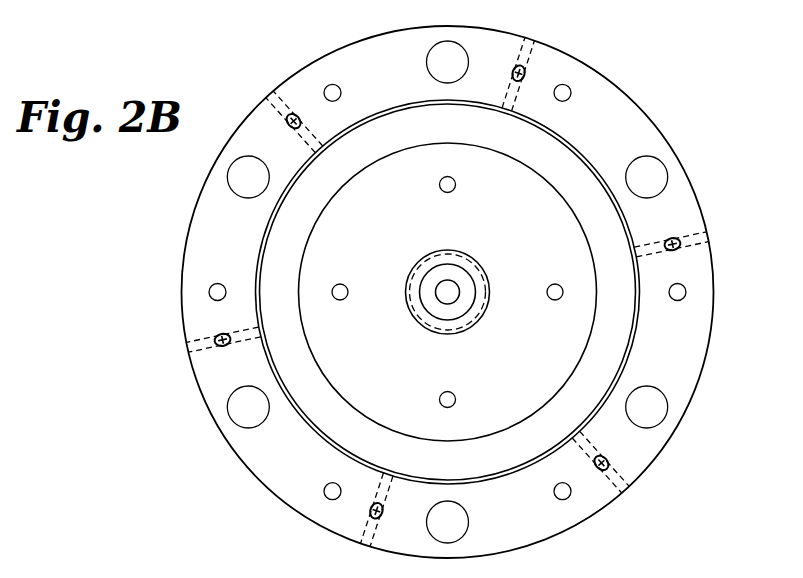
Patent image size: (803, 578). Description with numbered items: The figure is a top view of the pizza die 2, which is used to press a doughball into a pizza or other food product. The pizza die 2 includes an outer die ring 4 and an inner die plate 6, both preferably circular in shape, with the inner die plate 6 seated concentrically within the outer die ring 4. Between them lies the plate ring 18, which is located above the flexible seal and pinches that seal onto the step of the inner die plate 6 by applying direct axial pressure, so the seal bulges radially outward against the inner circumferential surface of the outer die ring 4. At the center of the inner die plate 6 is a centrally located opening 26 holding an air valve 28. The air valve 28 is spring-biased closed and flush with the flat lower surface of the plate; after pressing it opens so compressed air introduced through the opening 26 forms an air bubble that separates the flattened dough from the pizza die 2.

The pizza die 2 is at (637, 84).
The outer die ring 4 is at (633, 128).
The inner die plate 6 is at (529, 217).
The plate ring 18 is at (274, 270).
The centrally located opening 26 is at (478, 267).
The air valve 28 is at (435, 303).